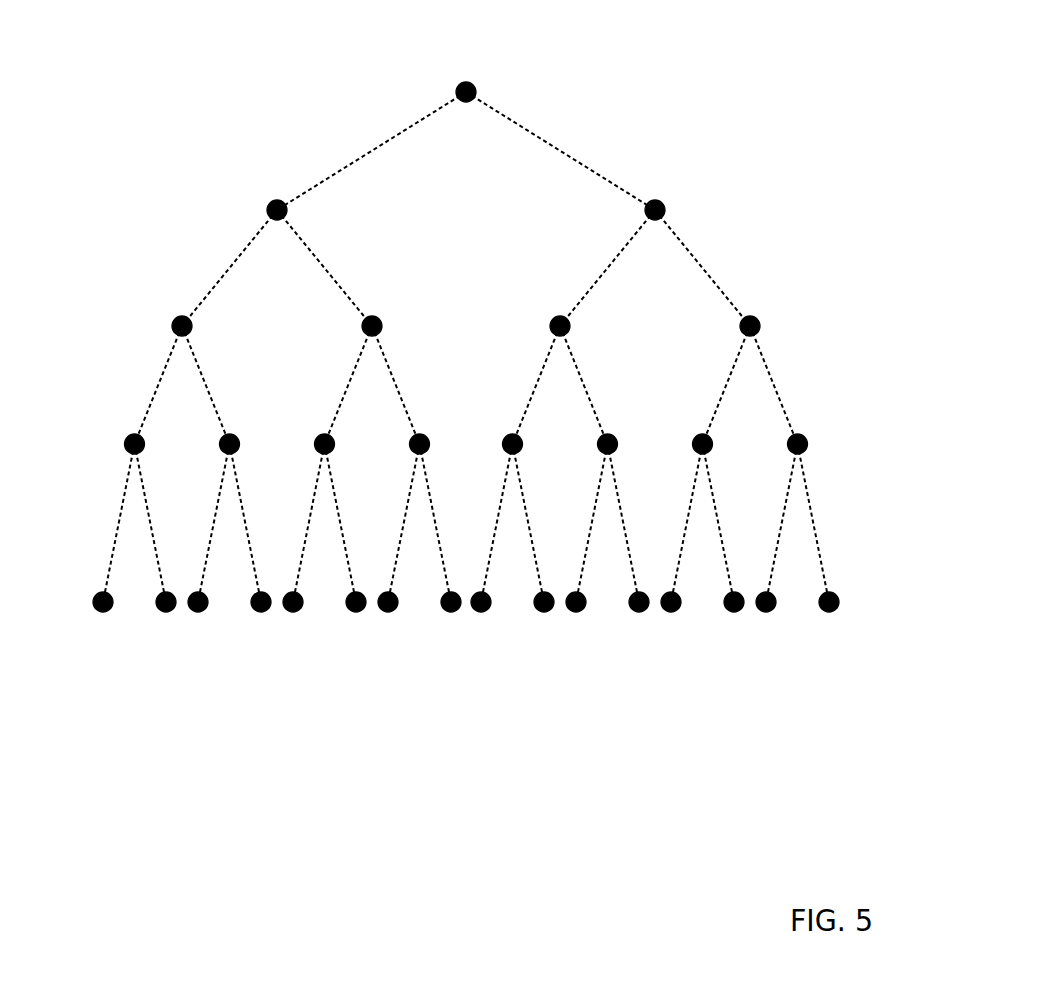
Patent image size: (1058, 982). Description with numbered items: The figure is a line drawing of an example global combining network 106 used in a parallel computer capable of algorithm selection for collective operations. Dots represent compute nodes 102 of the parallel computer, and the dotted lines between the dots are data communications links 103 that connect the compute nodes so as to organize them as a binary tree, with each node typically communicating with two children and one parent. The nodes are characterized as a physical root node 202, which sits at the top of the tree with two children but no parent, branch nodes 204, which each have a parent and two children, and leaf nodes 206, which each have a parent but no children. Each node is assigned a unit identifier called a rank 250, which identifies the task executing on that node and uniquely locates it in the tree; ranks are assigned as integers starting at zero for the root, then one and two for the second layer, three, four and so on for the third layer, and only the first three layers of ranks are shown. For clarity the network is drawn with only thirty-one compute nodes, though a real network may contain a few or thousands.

The compute nodes 102 is at (543, 612).
The data communications links 103 is at (382, 145).
The global combining network 106 is at (305, 852).
The physical root node 202 is at (607, 63).
The branch nodes 204 is at (852, 155).
The leaf nodes 206 is at (852, 637).
The rank 250 is at (617, 220).